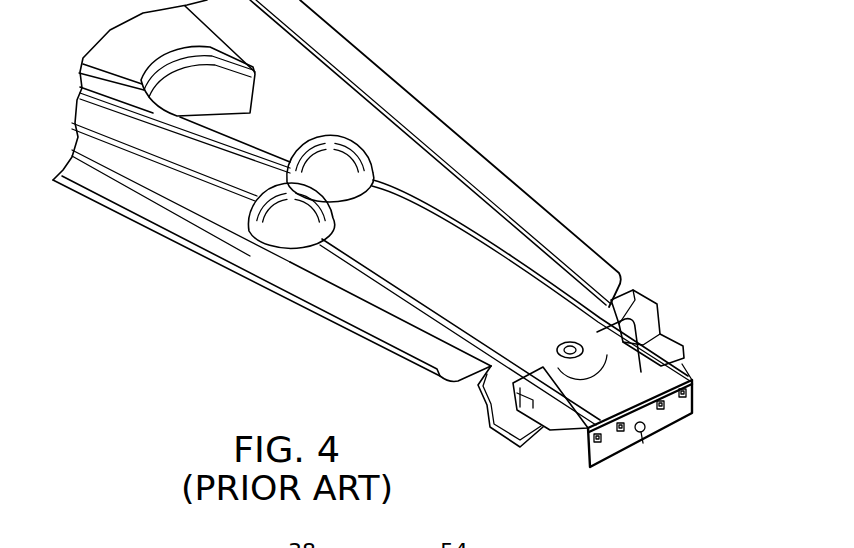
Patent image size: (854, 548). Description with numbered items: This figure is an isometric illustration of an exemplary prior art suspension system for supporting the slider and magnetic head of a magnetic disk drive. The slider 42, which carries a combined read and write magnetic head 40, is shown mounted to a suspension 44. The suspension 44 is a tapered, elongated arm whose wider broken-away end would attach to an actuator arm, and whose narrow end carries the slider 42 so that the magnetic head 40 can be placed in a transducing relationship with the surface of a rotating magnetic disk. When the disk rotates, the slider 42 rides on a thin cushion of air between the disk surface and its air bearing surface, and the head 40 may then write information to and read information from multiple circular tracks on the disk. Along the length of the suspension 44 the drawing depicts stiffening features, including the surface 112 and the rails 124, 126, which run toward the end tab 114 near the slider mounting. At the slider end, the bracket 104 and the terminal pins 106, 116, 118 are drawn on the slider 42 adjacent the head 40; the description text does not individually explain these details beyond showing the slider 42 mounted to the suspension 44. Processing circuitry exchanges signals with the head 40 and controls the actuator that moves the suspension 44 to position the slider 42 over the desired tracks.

The magnetic head 40 is at (643, 447).
The slider 42 is at (531, 452).
The suspension 44 is at (472, 147).
The retaining bracket 104 is at (588, 430).
The terminal pin 106 is at (688, 391).
The arm body 112 is at (367, 270).
The end tab 114 is at (527, 260).
The terminal pin 116 is at (621, 433).
The terminal pin 118 is at (666, 411).
The rail 124 is at (383, 272).
The curved rail 126 is at (455, 222).